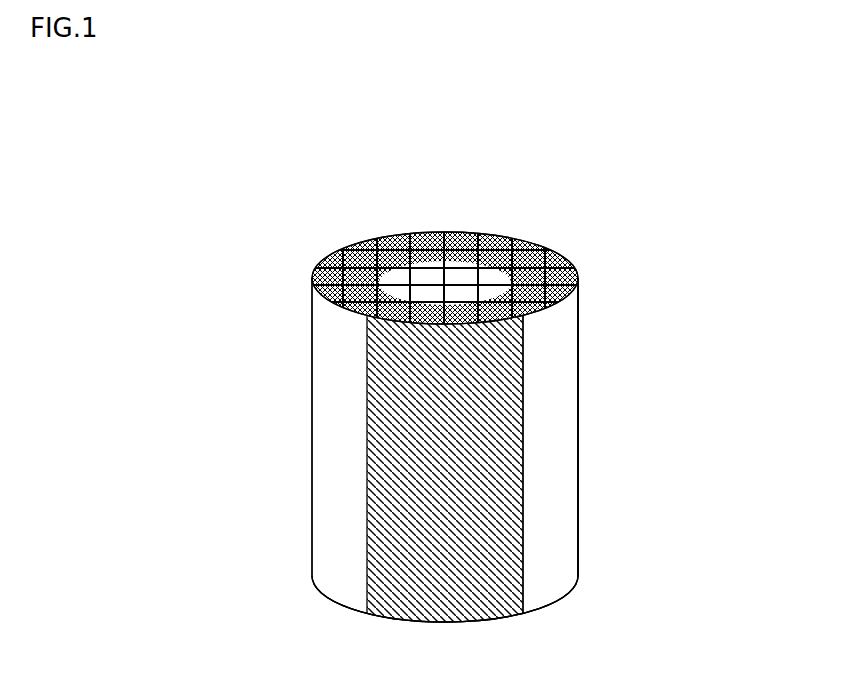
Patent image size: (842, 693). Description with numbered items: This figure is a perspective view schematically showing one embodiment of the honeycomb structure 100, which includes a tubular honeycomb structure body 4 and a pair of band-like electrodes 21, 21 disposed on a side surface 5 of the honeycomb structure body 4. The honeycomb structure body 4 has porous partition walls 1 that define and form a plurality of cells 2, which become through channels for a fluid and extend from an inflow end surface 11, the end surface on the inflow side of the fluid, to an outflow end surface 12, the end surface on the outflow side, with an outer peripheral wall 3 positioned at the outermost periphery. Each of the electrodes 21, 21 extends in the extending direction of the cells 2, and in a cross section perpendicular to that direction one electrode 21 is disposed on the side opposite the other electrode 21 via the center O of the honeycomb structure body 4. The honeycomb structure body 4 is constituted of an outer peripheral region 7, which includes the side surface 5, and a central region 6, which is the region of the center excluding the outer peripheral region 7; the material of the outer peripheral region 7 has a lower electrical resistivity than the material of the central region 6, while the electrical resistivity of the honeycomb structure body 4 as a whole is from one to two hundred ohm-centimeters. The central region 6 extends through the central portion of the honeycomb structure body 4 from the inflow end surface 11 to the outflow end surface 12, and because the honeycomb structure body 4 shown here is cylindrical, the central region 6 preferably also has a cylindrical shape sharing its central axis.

The honeycomb structure 100 is at (793, 107).
The partition walls 1 is at (312, 290).
The inflow end surface 11 is at (572, 597).
The outflow end surface 12 is at (325, 263).
The cells 2 is at (352, 247).
The electrodes 21 is at (462, 228).
The outer peripheral wall 3 is at (570, 390).
The honeycomb structure body 4 is at (581, 325).
The side surface 5 is at (563, 473).
The central region 6 is at (430, 228).
The outer peripheral region 7 is at (390, 233).
The center O is at (574, 264).